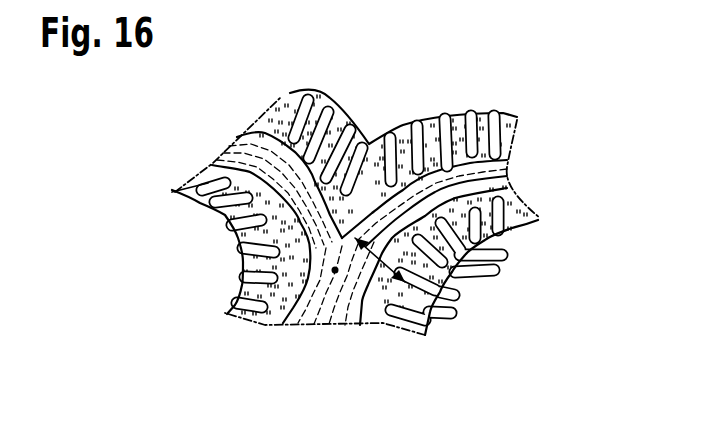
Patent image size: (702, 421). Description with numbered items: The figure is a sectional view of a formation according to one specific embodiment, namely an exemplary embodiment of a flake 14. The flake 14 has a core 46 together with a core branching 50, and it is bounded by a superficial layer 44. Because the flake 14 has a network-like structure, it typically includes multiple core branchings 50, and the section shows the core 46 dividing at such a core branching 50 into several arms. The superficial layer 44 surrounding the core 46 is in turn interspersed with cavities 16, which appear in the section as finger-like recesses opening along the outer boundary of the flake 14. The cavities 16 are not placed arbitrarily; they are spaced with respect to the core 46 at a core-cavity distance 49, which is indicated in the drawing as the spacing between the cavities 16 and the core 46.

The flake 14 is at (551, 84).
The cavities 16 is at (200, 200).
The superficial layer 44 is at (198, 187).
The core 46 is at (262, 158).
The core-cavity distance 49 is at (367, 255).
The core branching 50 is at (335, 270).